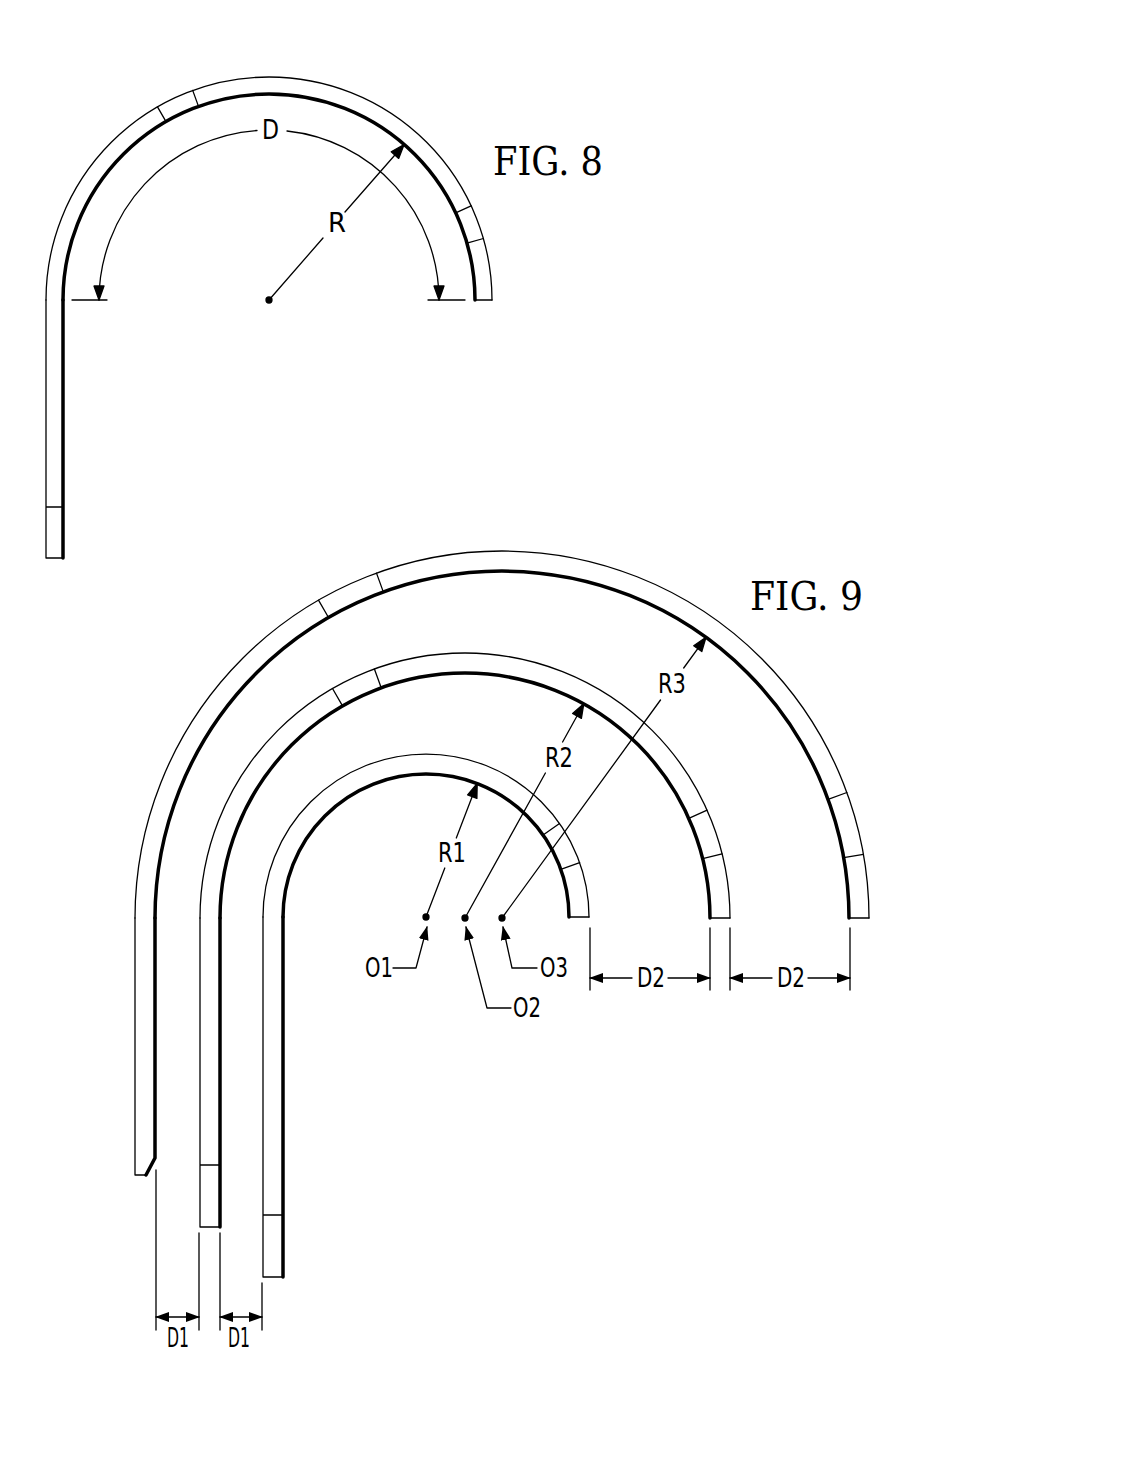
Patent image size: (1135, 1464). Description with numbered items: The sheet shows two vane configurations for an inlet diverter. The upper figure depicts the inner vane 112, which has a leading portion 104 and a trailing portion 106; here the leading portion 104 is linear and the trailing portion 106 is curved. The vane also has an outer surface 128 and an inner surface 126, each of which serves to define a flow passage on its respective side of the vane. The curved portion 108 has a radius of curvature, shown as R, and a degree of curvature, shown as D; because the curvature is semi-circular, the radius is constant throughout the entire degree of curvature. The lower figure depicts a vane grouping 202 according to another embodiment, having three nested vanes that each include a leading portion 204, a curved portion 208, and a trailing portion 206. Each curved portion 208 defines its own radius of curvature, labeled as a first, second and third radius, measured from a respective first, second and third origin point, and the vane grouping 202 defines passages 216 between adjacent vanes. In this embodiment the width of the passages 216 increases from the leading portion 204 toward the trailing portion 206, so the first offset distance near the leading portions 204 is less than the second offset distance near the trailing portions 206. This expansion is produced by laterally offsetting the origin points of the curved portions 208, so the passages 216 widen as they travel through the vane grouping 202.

In FIG. 8, the leading portion 104 is at (75, 538).
In FIG. 8, the trailing portion 106 is at (507, 275).
In FIG. 8, the curved portion 108 is at (269, 153).
In FIG. 8, the inner vane 112 is at (377, 103).
In FIG. 8, the inner surface 126 is at (94, 194).
In FIG. 8, the outer surface 128 is at (137, 118).
In FIG. 9, the vane grouping 202 is at (501, 864).
In FIG. 9, the leading portion 204 is at (125, 1159).
In FIG. 9, the trailing portion 206 is at (598, 902).
In FIG. 9, the curved portion 208 is at (536, 549).
In FIG. 9, the passages 216 is at (477, 630).